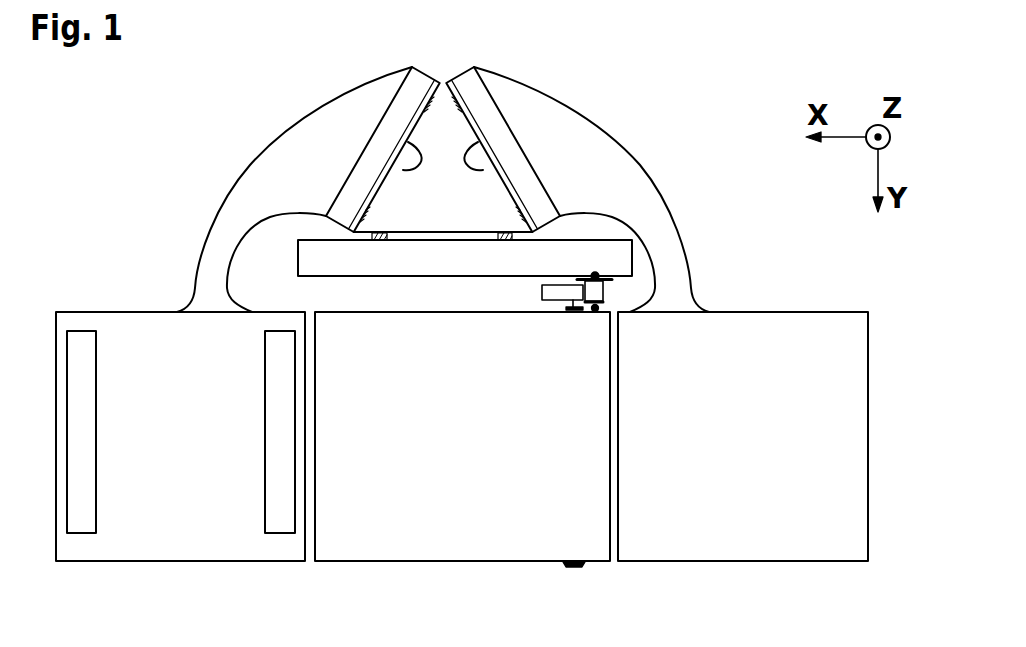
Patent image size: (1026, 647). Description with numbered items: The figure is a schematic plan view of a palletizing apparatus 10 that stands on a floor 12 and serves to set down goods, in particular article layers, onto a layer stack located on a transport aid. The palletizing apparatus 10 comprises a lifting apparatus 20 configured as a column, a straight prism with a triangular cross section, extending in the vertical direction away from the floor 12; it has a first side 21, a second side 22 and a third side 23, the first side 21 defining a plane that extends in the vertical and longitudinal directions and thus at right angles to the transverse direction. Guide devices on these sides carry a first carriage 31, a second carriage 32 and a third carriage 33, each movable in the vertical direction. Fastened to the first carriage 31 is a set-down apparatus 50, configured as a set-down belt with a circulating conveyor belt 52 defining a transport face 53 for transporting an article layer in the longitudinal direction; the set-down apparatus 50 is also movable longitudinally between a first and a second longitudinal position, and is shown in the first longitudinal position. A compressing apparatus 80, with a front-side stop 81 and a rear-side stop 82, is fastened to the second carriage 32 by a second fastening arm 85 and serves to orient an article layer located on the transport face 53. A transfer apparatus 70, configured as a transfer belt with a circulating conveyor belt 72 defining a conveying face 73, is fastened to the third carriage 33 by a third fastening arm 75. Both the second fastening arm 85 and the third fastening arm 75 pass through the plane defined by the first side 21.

The palletizing apparatus 10 is at (649, 73).
The floor 12 is at (824, 277).
The lifting apparatus 20 is at (548, 195).
The first side 21 is at (378, 192).
The second side 22 is at (403, 170).
The third side 23 is at (483, 170).
The first carriage 31 is at (461, 262).
The second carriage 32 is at (388, 127).
The third carriage 33 is at (498, 127).
The set-down apparatus 50 is at (478, 520).
The circulating conveyor belt 52 is at (551, 520).
The transport face 53 is at (426, 455).
The transfer apparatus 70 is at (746, 520).
The circulating conveyor belt 72 is at (817, 520).
The conveying face 73 is at (692, 453).
The third fastening arm 75 is at (662, 240).
The compressing apparatus 80 is at (193, 520).
The front-side stop 81 is at (84, 520).
The rear-side stop 82 is at (281, 520).
The second fastening arm 85 is at (222, 240).